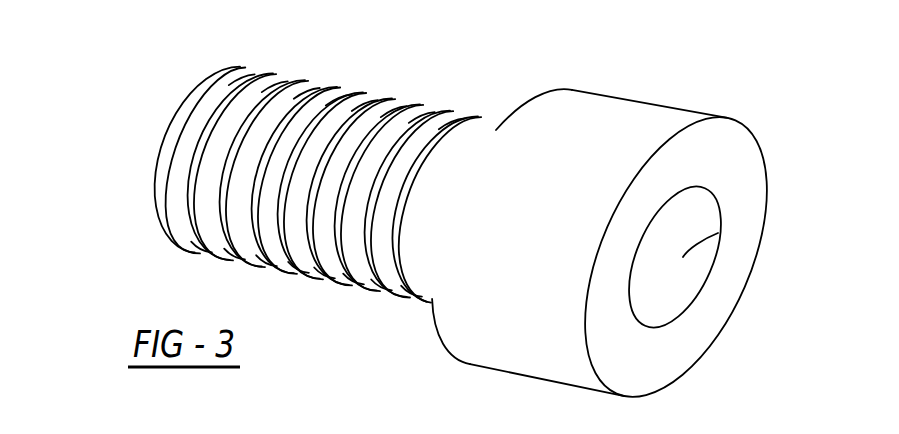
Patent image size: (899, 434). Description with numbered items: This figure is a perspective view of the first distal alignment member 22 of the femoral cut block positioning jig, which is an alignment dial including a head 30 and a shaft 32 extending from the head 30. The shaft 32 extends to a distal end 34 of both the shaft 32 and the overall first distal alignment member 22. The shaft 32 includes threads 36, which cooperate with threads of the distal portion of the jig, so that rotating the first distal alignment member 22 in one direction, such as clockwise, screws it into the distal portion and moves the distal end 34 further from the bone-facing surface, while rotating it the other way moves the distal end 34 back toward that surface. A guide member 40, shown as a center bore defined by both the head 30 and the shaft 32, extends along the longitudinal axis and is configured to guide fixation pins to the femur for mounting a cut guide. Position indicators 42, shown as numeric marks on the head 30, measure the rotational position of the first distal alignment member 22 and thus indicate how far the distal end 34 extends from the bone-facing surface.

The first distal alignment member 22 is at (110, 102).
The head 30 is at (617, 133).
The shaft 32 is at (290, 110).
The distal end 34 is at (163, 172).
The threads 36 is at (357, 100).
The guide member 40 is at (683, 257).
The position indicators 42 is at (707, 147).